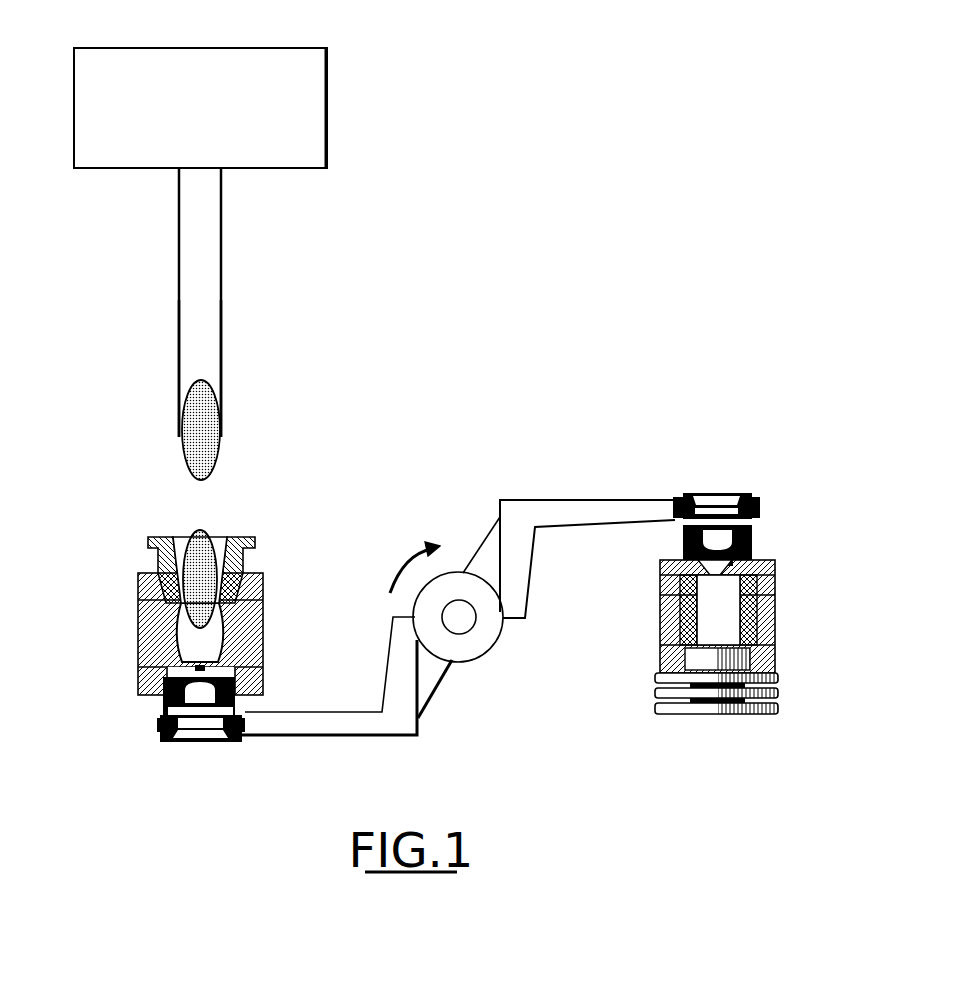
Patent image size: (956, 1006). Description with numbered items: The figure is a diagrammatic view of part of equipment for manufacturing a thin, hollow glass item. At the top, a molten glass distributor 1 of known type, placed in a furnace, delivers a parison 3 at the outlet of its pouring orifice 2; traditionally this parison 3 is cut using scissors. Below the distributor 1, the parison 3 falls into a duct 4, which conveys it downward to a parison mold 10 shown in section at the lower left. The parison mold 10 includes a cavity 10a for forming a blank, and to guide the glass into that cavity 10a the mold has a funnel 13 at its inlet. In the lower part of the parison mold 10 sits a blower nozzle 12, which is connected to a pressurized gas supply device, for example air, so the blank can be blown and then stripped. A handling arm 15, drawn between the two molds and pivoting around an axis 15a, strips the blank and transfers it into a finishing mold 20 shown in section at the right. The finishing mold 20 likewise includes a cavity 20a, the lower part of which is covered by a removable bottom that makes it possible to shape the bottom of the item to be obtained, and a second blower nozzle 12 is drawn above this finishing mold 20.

The molten glass distributor 1 is at (310, 113).
The pouring orifice 2 is at (173, 169).
The parison 3 is at (195, 450).
The duct 4 is at (179, 333).
The parison mold 10 is at (151, 612).
The cavity 10a is at (195, 640).
The blower nozzle 12 is at (160, 700).
The funnel 13 is at (150, 538).
The handling arm 15 is at (459, 631).
The axis 15a is at (452, 612).
The finishing mold 20 is at (745, 621).
The cavity 20a is at (725, 627).